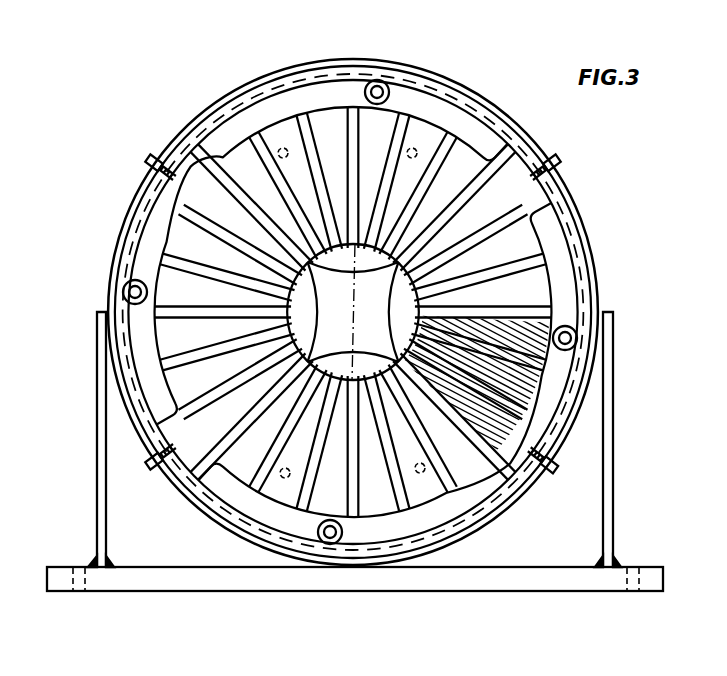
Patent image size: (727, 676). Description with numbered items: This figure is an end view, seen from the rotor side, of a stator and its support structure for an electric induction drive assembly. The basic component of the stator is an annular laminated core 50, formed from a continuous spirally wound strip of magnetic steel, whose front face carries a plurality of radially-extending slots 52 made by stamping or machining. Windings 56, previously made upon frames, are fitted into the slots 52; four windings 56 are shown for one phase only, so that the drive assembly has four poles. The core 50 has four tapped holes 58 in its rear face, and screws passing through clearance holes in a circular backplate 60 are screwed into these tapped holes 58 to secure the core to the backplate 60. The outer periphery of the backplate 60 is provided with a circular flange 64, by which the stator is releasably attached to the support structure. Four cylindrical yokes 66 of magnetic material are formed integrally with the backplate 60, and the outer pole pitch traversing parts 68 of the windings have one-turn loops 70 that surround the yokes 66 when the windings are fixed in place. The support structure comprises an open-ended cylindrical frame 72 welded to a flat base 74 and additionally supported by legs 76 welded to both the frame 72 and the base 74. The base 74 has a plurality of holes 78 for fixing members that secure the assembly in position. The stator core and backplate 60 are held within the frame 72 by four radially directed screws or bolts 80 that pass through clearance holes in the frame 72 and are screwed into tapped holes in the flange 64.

The annular laminated core 50 is at (428, 138).
The radially-extending slots 52 is at (207, 230).
The windings 56 is at (250, 120).
The tapped holes 58 is at (283, 147).
The circular backplate 60 is at (204, 134).
The circular flange 64 is at (470, 100).
The cylindrical yokes 66 is at (377, 104).
The outer pole pitch traversing parts 68 is at (486, 100).
The one-turn loops 70 is at (366, 101).
The open-ended cylindrical frame 72 is at (524, 128).
The flat base 74 is at (490, 591).
The legs 76 is at (97, 445).
The holes 78 is at (85, 591).
The radially directed screws or bolts 80 is at (145, 160).